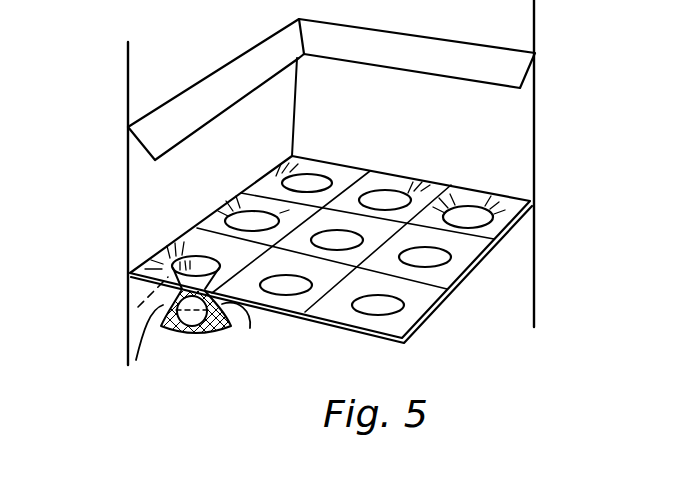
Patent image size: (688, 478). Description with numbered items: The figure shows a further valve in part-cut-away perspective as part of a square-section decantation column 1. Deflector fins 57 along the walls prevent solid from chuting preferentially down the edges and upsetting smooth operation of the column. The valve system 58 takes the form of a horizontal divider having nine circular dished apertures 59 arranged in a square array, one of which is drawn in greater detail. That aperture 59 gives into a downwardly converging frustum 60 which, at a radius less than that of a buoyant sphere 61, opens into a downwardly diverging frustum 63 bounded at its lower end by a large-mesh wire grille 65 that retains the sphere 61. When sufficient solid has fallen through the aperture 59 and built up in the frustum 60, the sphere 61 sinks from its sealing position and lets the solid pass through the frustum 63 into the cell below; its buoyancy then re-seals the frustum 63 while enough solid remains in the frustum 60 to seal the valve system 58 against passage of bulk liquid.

The decantation column 1 is at (127, 80).
The deflector fins 57 is at (247, 76).
The valve system 58 is at (118, 286).
The dished aperture 59 is at (201, 262).
The downwardly converging frustum 60 is at (130, 311).
The buoyant sphere 61 is at (248, 331).
The downwardly diverging frustum 63 is at (128, 358).
The large-mesh wire grille 65 is at (203, 334).